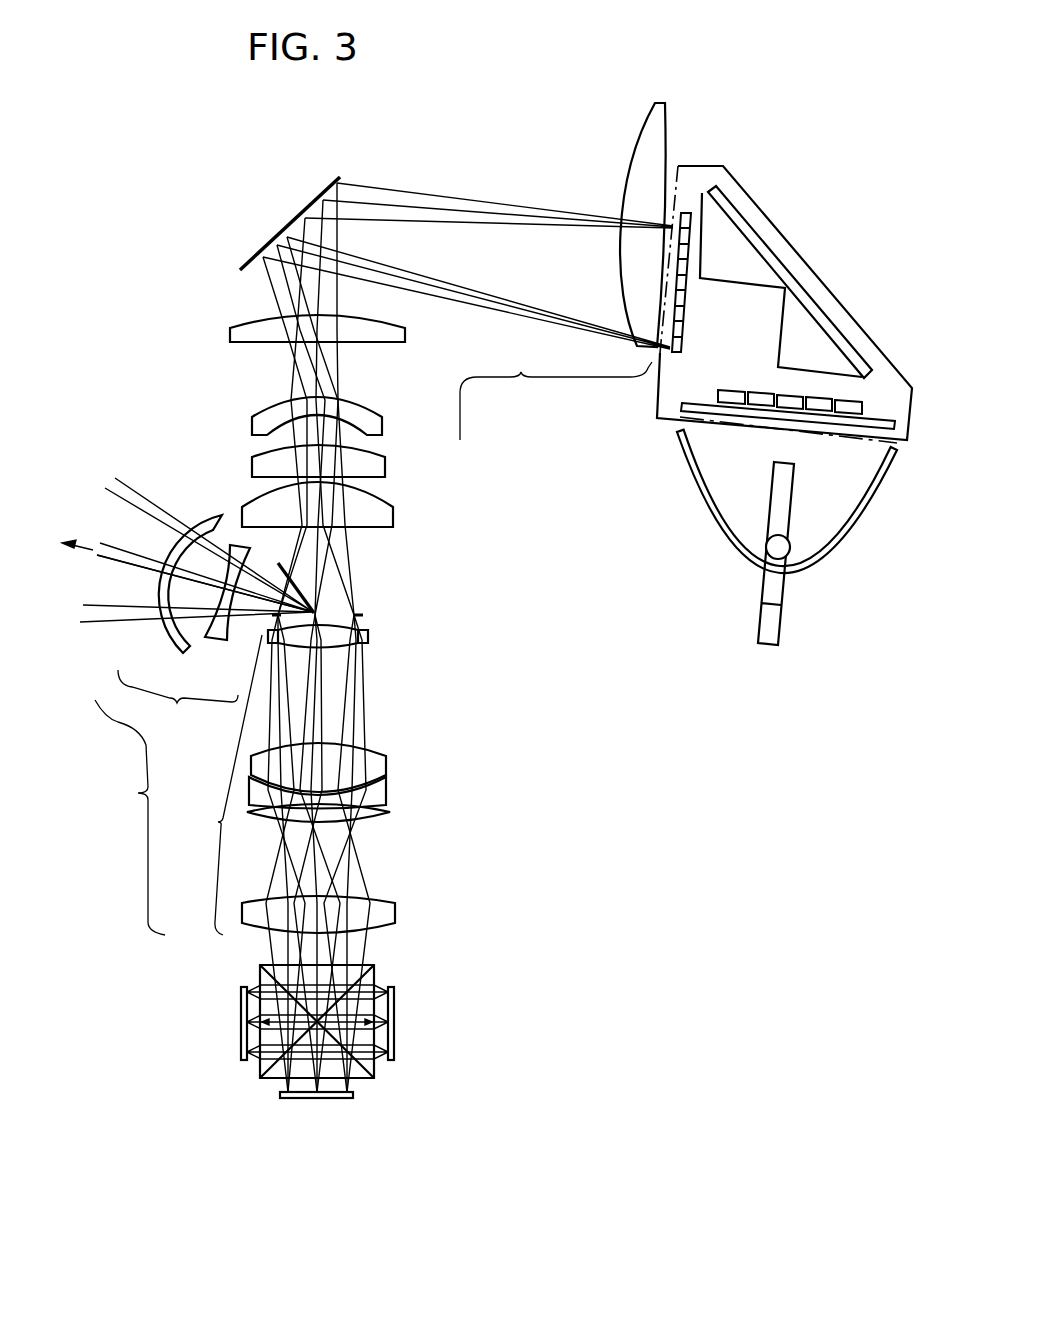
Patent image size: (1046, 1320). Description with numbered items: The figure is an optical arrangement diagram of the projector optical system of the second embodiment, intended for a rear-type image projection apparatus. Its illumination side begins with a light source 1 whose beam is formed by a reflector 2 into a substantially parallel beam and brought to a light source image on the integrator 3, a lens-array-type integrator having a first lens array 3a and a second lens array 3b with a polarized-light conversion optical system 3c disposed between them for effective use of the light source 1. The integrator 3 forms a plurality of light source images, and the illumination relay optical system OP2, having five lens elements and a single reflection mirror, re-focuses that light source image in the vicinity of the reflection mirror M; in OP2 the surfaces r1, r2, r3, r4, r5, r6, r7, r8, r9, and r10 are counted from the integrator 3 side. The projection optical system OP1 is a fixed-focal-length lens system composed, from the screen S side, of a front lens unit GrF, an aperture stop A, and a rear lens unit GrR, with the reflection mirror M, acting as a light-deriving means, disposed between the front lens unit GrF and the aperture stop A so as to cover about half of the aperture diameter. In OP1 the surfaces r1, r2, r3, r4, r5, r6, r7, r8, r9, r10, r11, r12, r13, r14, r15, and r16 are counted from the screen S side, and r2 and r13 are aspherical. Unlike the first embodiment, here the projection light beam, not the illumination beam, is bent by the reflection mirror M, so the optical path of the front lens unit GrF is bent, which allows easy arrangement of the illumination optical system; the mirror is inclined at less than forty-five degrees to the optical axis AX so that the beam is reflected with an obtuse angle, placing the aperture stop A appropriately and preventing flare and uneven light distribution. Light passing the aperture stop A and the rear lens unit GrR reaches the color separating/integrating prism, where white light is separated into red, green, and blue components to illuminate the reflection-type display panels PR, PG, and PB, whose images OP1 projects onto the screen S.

The first surface r1 is at (437, 372).
The second surface r2 is at (648, 125).
The third surface r3 is at (284, 492).
The fourth surface r4 is at (235, 343).
The fifth surface r5 is at (301, 529).
The sixth surface r6 is at (408, 658).
The seventh surface r7 is at (346, 602).
The eighth surface r8 is at (370, 480).
The ninth surface r9 is at (348, 652).
The tenth surface r10 is at (370, 528).
The eleventh surface r11 is at (351, 846).
The twelfth surface r12 is at (386, 820).
The thirteenth surface r13 is at (358, 922).
The fourteenth surface r14 is at (385, 930).
The fifteenth surface r15 is at (358, 1031).
The sixteenth surface r16 is at (365, 1080).
The light source 1 is at (773, 548).
The reflector 2 is at (818, 558).
The integrator 3 is at (735, 180).
The first lens array 3a is at (718, 395).
The second lens array 3b is at (673, 357).
The polarized-light conversion optical system 3c is at (807, 347).
The reflection mirror M is at (278, 562).
The aperture stop A is at (358, 613).
The screen S is at (55, 550).
The optical axis AX is at (122, 565).
The front lens unit GrF is at (178, 704).
The rear lens unit GrR is at (214, 785).
The projection optical system OP1 is at (122, 817).
The illumination relay optical system OP2 is at (556, 401).
The blue reflection-type display panel PB is at (240, 1026).
The red reflection-type display panel PR is at (395, 1015).
The green reflection-type display panel PG is at (332, 1098).